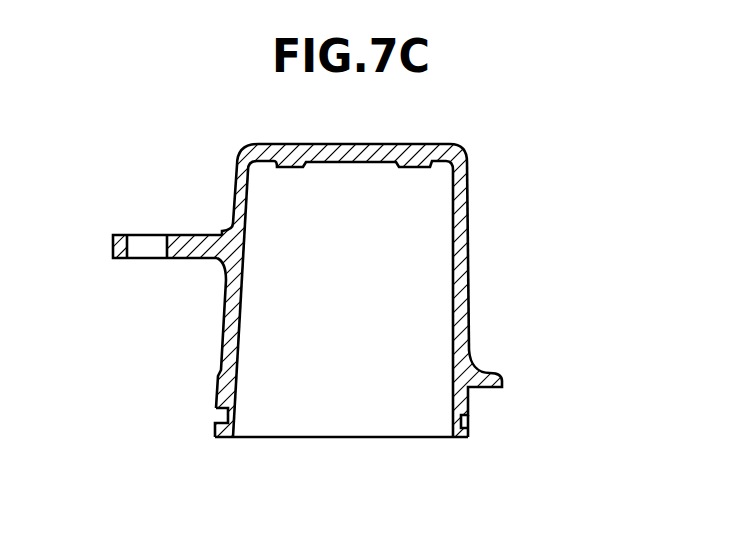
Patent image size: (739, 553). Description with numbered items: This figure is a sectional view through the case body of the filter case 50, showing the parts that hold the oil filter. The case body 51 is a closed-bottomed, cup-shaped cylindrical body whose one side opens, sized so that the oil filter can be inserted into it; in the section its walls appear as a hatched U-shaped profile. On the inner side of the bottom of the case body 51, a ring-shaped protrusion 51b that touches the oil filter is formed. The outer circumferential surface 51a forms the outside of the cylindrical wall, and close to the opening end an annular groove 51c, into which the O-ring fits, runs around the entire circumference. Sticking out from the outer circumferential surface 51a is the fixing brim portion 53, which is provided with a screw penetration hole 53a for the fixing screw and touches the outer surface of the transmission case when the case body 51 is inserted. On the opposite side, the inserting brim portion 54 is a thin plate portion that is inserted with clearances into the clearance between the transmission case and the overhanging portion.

The filter case 50 is at (235, 124).
The case body 51 is at (459, 143).
The outer circumferential surface 51a is at (467, 278).
The ring-shaped protrusion 51b is at (410, 168).
The annular groove 51c is at (210, 415).
The fixing brim portion 53 is at (192, 237).
The screw penetration hole 53a is at (148, 245).
The inserting brim portion 54 is at (481, 363).